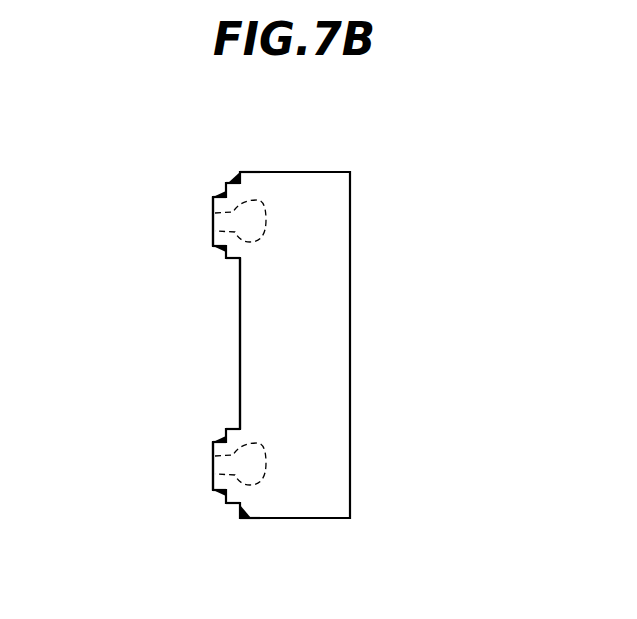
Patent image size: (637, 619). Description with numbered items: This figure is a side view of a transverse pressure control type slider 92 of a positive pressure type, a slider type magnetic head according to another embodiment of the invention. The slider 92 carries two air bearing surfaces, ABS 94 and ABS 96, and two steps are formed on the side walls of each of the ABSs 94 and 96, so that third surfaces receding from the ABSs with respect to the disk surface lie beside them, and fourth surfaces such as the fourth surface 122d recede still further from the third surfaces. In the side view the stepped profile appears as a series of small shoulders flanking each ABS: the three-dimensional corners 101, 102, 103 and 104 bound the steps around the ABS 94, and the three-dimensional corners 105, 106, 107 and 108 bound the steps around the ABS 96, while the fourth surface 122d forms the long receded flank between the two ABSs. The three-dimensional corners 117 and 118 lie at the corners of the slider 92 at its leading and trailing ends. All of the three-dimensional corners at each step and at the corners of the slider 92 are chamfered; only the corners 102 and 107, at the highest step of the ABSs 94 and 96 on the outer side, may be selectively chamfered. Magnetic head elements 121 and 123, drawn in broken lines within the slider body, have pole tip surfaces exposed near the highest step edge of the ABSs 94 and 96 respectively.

The slider 92 is at (395, 128).
The ABS 94 is at (195, 222).
The ABS 96 is at (195, 465).
The three-dimensional corner 101 is at (229, 183).
The three-dimensional corner 102 is at (220, 198).
The three-dimensional corner 103 is at (220, 247).
The three-dimensional corner 104 is at (228, 259).
The three-dimensional corner 105 is at (228, 429).
The three-dimensional corner 106 is at (216, 442).
The three-dimensional corner 107 is at (217, 491).
The three-dimensional corner 108 is at (224, 506).
The three-dimensional corner 117 is at (243, 172).
The three-dimensional corner 118 is at (243, 518).
The magnetic head element 121 is at (266, 222).
The fourth surface 122d is at (238, 342).
The magnetic head element 123 is at (266, 462).